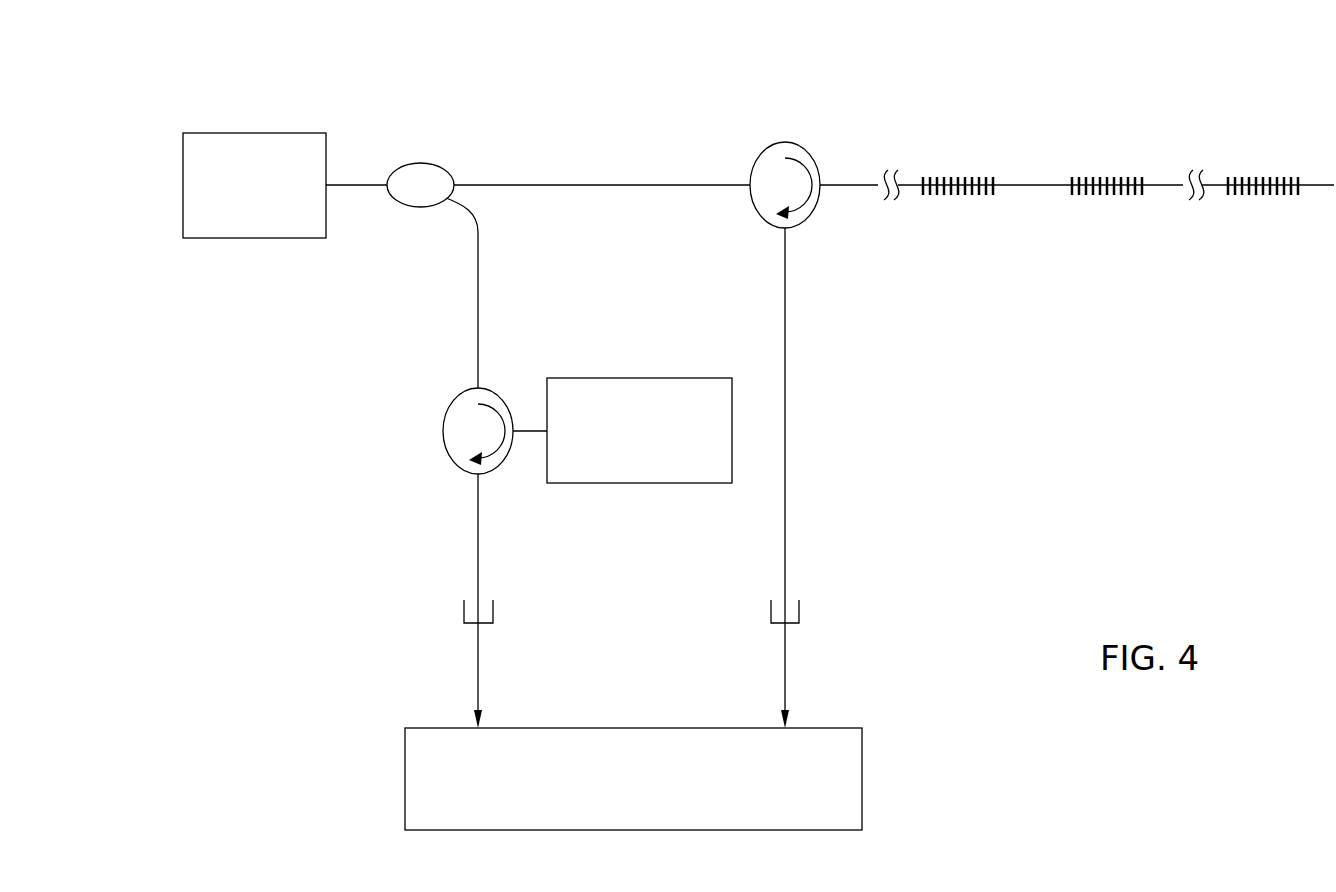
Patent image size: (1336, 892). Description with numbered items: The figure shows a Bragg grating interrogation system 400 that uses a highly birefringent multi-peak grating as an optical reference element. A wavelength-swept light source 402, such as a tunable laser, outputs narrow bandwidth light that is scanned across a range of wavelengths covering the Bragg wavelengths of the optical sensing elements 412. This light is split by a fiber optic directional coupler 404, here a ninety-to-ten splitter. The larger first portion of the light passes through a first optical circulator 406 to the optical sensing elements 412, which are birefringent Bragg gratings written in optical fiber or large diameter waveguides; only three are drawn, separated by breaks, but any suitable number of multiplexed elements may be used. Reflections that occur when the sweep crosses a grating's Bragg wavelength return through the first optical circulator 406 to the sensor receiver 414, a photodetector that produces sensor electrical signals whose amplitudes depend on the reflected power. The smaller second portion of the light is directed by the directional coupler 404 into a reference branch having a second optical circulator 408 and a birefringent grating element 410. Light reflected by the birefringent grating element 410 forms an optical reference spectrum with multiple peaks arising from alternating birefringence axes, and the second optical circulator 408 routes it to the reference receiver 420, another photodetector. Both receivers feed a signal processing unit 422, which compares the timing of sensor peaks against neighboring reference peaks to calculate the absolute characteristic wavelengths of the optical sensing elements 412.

The Bragg grating interrogation system 400 is at (214, 84).
The wavelength-swept light source 402 is at (306, 132).
The fiber optic directional coupler 404 is at (412, 207).
The first optical circulator 406 is at (787, 141).
The second optical circulator 408 is at (498, 395).
The birefringent grating reference element 410 is at (662, 378).
The optical sensing elements 412 is at (1265, 138).
The sensor receiver 414 is at (800, 608).
The reference receiver 420 is at (494, 608).
The signal processing unit 422 is at (612, 785).